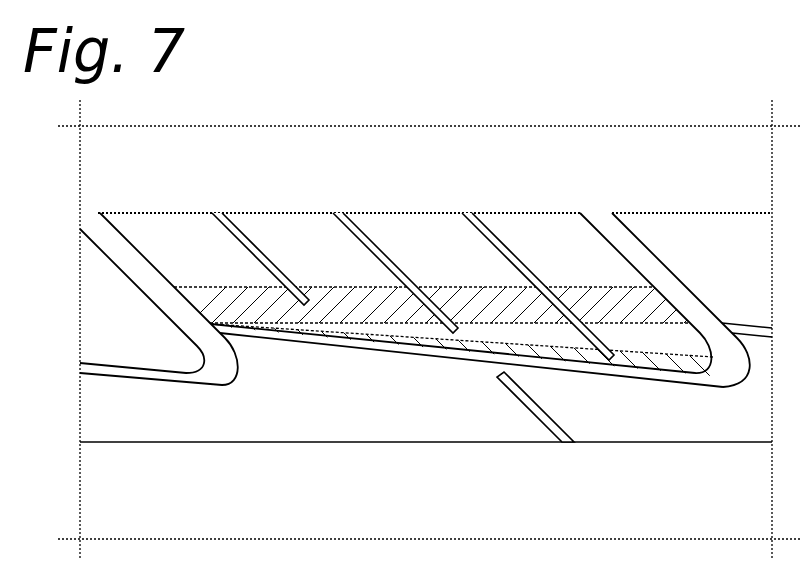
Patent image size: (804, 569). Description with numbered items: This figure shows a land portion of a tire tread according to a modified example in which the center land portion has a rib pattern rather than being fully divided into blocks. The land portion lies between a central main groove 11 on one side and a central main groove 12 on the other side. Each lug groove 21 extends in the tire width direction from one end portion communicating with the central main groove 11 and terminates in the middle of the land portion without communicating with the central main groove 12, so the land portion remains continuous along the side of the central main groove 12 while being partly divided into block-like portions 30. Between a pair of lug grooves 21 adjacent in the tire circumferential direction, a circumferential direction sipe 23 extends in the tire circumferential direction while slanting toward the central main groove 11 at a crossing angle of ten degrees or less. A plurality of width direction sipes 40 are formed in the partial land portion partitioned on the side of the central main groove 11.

The central main groove 11 is at (457, 176).
The central main groove 12 is at (482, 509).
The lug groove 21 is at (603, 218).
The circumferential direction sipe 23 is at (422, 357).
The block 30 is at (158, 230).
The width direction sipe 40 is at (250, 240).